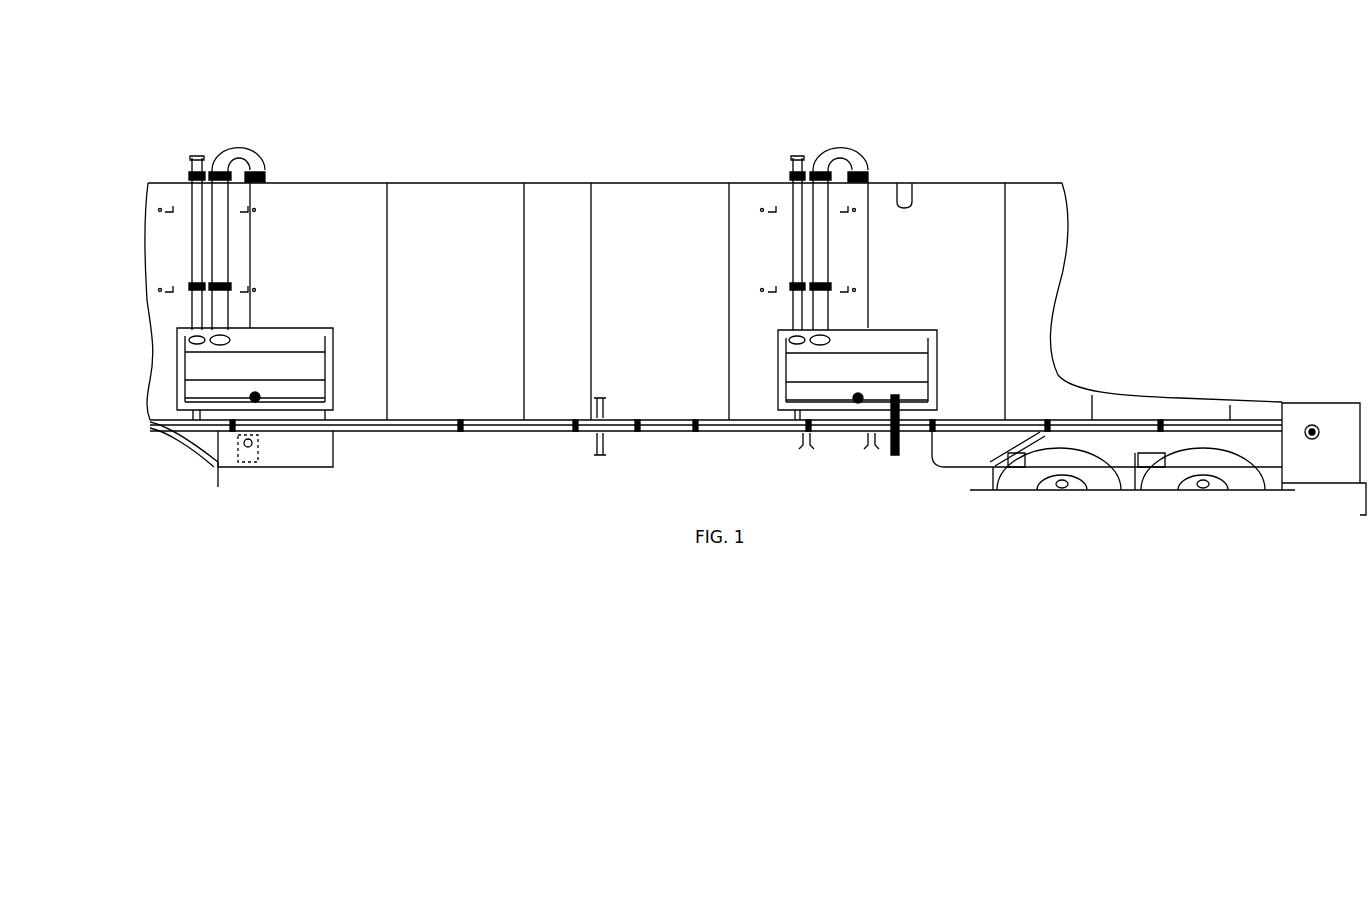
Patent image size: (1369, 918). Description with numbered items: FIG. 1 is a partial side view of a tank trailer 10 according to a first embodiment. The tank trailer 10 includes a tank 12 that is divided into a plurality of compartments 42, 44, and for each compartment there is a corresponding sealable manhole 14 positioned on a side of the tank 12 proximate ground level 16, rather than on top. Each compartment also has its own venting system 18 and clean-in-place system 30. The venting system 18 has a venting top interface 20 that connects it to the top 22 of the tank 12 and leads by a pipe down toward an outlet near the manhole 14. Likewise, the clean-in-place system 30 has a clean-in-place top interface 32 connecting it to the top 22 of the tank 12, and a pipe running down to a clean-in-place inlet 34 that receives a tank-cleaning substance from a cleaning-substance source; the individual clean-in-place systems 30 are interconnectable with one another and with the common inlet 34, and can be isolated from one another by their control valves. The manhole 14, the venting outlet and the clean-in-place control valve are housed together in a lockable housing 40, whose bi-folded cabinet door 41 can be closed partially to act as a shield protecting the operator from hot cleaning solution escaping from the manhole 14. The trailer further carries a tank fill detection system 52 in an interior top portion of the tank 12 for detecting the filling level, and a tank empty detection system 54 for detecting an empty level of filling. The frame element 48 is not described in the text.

The tank trailer 10 is at (757, 82).
The tank 12 is at (666, 183).
The sealable manhole 14 is at (312, 458).
The ground level 16 is at (970, 490).
The venting system 18 is at (248, 150).
The venting top interface 20 is at (270, 178).
The top of the tank 22 is at (568, 176).
The clean-in-place system 30 is at (185, 254).
The clean-in-place top interface 32 is at (185, 176).
The clean-in-place inlet 34 is at (1320, 420).
The lockable housing 40 is at (340, 352).
The cabinet door 41 is at (315, 390).
The compartment 42 is at (968, 195).
The compartment 44 is at (417, 200).
The frame rail 48 is at (562, 425).
The tank fill detection system 52 is at (917, 178).
The tank empty detection system 54 is at (853, 437).